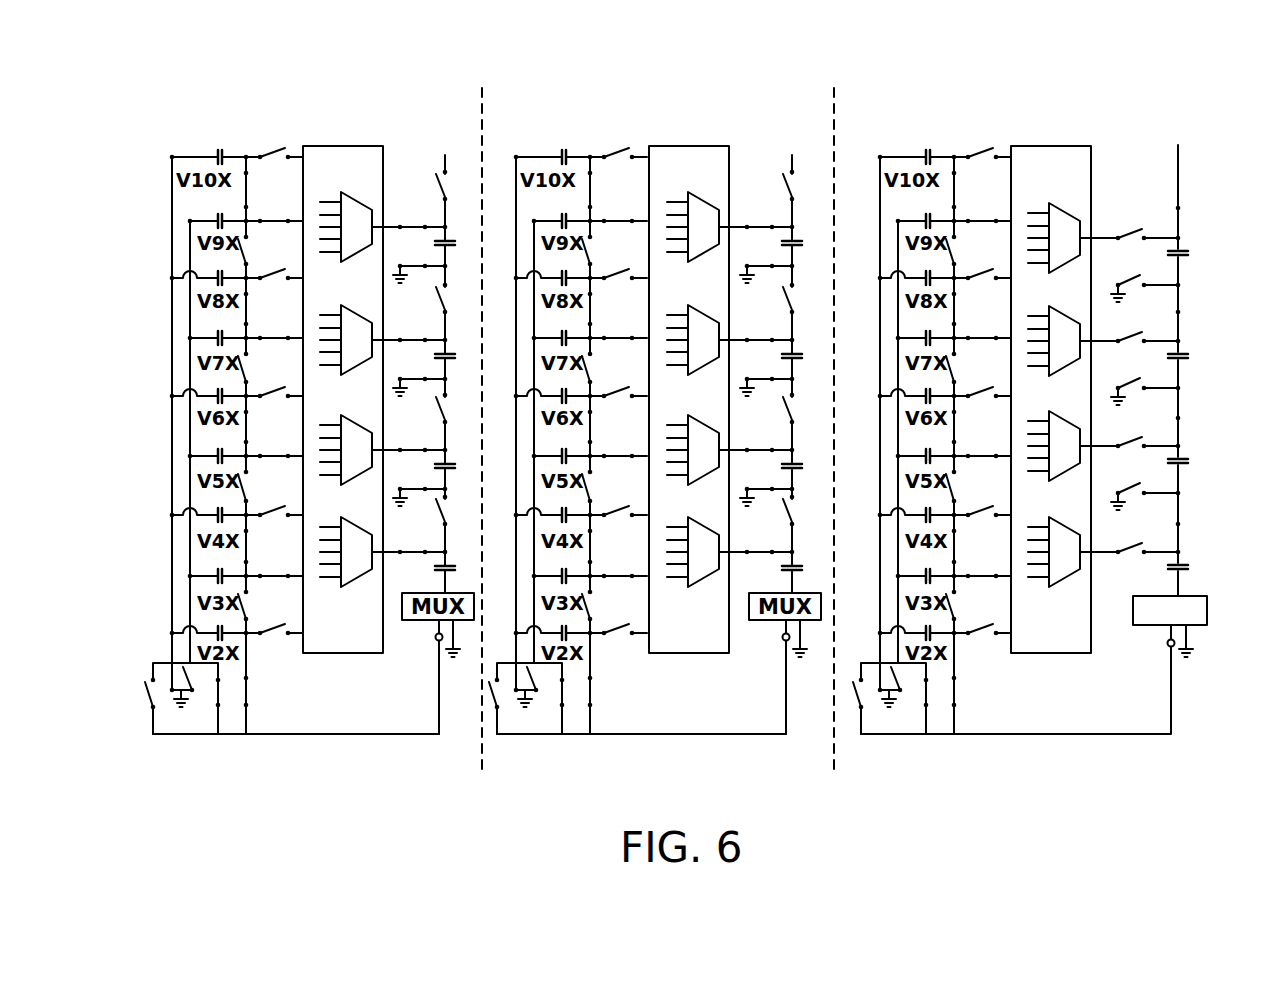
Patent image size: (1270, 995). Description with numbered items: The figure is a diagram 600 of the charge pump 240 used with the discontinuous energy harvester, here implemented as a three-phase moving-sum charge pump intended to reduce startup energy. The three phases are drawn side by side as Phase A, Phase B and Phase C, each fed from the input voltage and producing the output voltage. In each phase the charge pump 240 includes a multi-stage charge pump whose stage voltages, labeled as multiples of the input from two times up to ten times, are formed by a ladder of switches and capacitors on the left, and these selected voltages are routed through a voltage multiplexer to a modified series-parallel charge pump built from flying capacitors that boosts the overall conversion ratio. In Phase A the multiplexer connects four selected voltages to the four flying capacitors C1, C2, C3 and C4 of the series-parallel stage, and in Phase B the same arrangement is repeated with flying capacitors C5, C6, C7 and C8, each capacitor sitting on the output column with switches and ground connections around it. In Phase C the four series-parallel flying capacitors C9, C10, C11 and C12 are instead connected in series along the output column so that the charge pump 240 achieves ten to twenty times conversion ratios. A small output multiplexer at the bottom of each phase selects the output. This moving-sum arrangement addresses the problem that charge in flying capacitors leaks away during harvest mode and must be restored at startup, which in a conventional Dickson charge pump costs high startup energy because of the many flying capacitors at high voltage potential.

The diagram 600 is at (160, 61).
The charge pump 240 is at (700, 87).
The flying capacitor C1 is at (455, 556).
The flying capacitor C2 is at (455, 454).
The flying capacitor C3 is at (455, 344).
The flying capacitor C4 is at (455, 231).
The flying capacitor C5 is at (802, 556).
The flying capacitor C6 is at (802, 454).
The flying capacitor C7 is at (802, 344).
The flying capacitor C8 is at (802, 231).
The flying capacitor C9 is at (1188, 555).
The flying capacitor C10 is at (1193, 449).
The flying capacitor C11 is at (1193, 344).
The flying capacitor C12 is at (1193, 241).